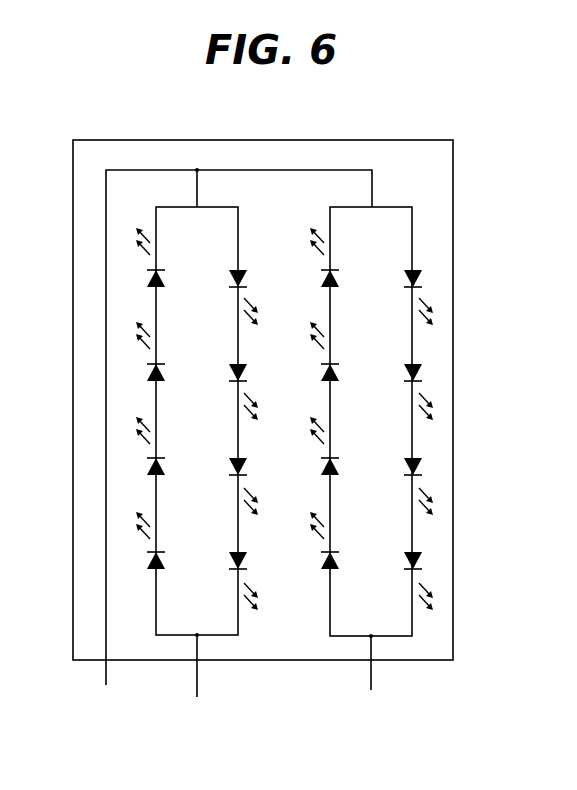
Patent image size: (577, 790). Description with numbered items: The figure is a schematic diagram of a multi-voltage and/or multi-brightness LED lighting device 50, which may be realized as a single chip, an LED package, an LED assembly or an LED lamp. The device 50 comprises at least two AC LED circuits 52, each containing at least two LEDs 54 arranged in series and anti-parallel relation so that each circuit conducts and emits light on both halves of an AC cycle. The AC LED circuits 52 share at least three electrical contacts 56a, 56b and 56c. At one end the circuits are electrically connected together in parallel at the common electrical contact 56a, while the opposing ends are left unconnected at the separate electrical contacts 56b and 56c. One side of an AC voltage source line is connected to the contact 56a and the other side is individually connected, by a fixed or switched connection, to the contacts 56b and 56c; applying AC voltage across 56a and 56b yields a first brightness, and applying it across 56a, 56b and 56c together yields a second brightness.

The multi-voltage and/or multi-brightness LED lighting device 50 is at (478, 200).
The AC LED circuit 52 is at (338, 643).
The LED 54 is at (236, 278).
The electrical contact 56a is at (199, 170).
The electrical contact 56b is at (197, 697).
The electrical contact 56c is at (372, 675).